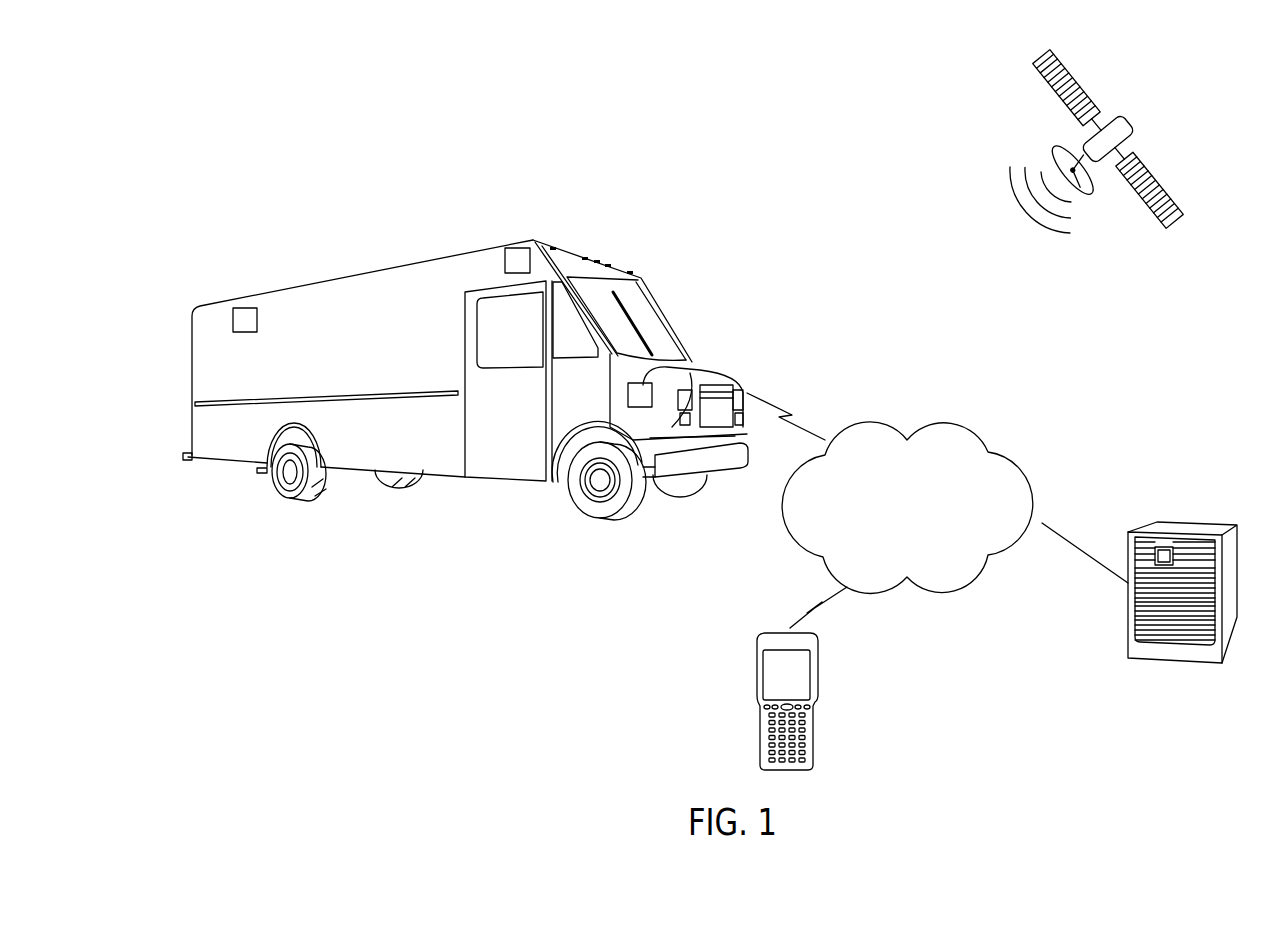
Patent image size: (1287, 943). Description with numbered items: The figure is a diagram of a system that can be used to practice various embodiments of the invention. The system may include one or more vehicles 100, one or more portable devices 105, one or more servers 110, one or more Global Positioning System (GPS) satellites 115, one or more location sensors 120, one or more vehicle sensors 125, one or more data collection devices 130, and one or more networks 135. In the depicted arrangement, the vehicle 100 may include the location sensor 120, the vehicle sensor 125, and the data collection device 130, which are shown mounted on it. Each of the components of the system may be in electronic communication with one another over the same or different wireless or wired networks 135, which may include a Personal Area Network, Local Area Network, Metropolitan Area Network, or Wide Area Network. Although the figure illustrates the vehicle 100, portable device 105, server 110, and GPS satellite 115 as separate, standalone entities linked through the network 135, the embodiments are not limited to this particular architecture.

The vehicle 100 is at (380, 268).
The portable device 105 is at (820, 662).
The server 110 is at (1212, 521).
The Global Positioning System (GPS) satellite 115 is at (1083, 142).
The location sensor 120 is at (516, 247).
The vehicle sensor 125 is at (248, 307).
The data collection device 130 is at (652, 383).
The network 135 is at (916, 521).